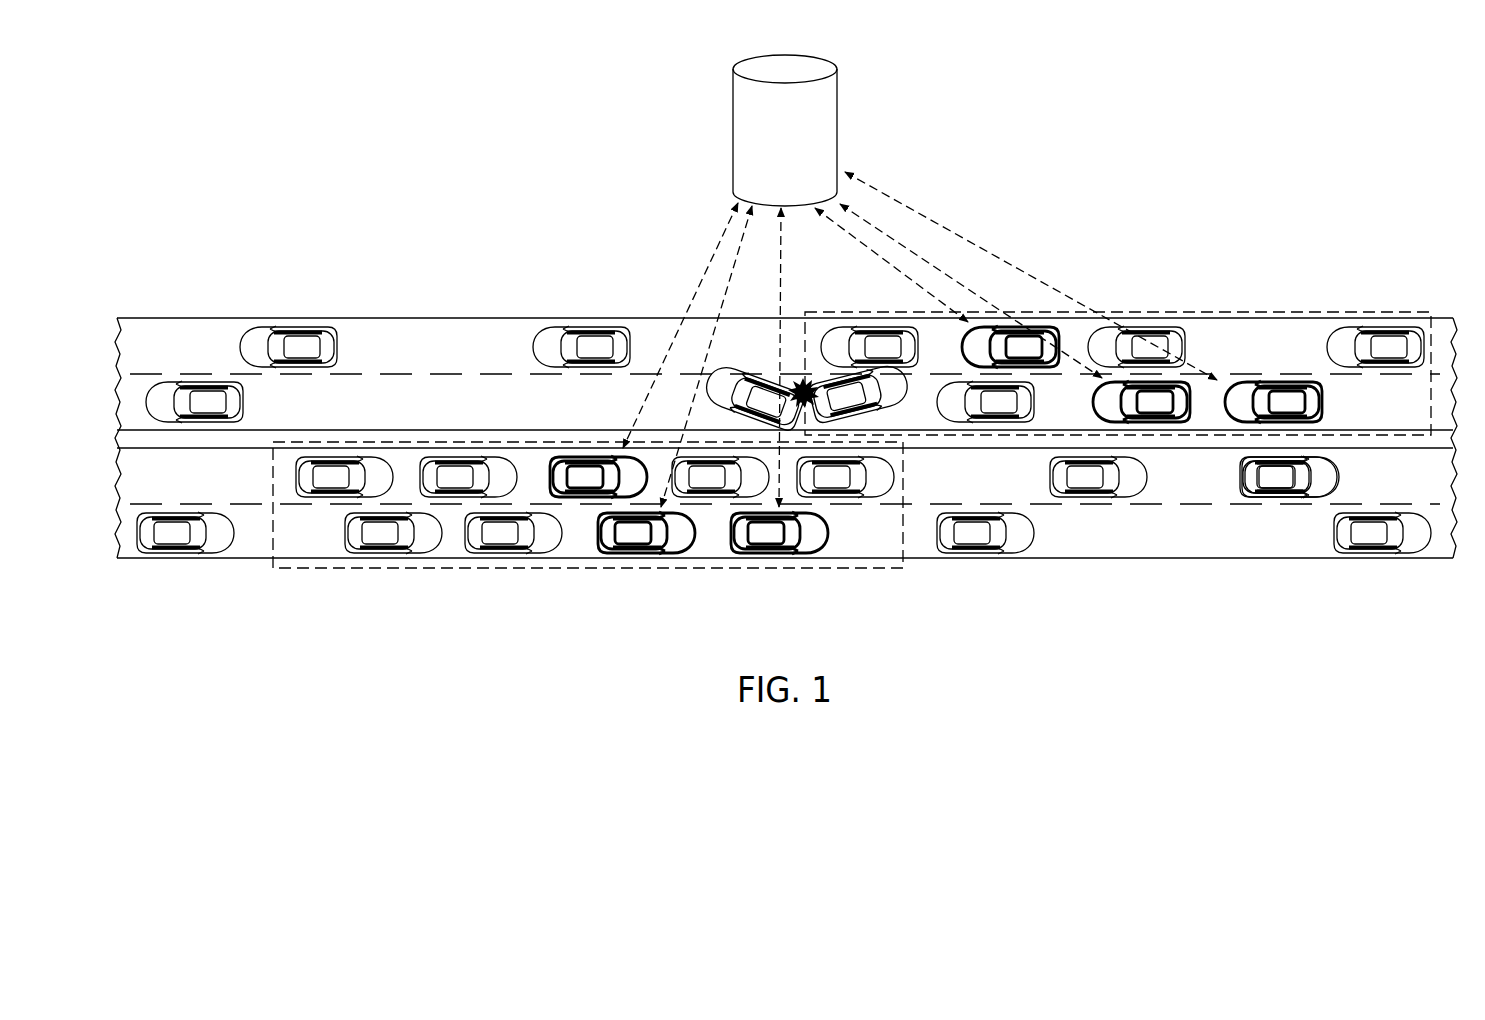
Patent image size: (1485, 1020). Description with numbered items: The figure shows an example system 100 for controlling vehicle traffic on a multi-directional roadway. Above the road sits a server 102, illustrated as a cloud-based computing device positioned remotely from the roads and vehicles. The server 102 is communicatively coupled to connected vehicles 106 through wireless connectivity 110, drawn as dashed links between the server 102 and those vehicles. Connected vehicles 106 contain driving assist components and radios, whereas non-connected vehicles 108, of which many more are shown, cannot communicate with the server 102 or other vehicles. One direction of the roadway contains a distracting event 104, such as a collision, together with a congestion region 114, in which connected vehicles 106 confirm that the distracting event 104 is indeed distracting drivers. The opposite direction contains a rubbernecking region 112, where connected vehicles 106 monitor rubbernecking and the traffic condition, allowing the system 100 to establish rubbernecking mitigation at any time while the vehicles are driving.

The system 100 is at (293, 122).
The server 102 is at (839, 130).
The distracting event 104 is at (803, 378).
The connected vehicles 106 is at (592, 456).
The non-connected vehicles 108 is at (348, 455).
The wireless connectivity 110 is at (700, 278).
The rubbernecking region 112 is at (500, 570).
The congestion region 114 is at (1334, 312).